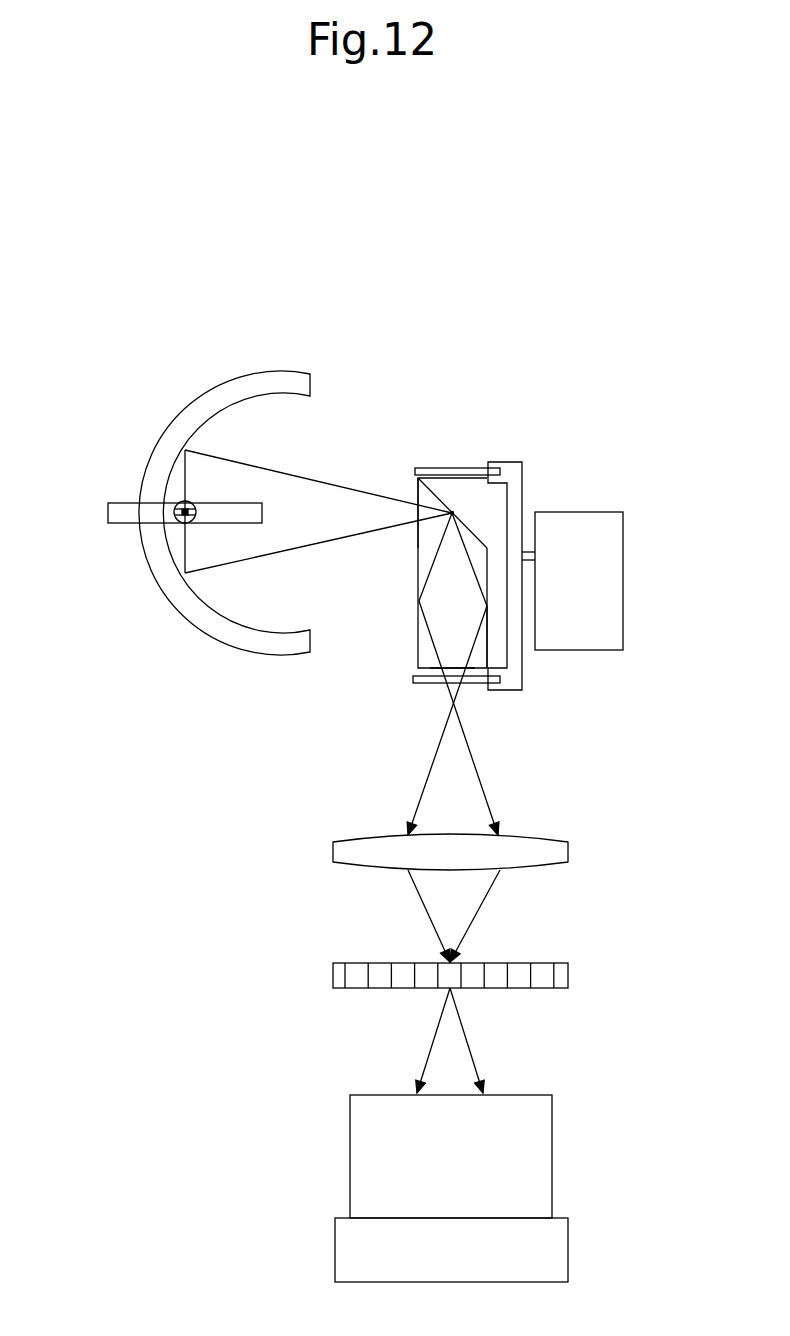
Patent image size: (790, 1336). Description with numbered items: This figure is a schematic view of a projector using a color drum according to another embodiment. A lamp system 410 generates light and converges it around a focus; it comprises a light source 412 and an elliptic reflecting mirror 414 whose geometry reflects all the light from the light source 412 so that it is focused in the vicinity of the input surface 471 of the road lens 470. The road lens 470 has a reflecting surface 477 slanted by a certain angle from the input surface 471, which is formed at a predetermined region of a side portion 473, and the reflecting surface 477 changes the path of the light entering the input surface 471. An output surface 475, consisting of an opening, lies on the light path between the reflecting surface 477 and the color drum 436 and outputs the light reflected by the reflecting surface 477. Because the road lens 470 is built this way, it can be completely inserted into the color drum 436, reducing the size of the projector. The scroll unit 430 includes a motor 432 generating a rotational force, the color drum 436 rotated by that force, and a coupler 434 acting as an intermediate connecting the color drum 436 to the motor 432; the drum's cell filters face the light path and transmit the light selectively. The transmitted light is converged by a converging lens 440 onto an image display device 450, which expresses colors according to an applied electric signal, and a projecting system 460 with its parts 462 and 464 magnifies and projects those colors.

The lamp system 410 is at (256, 521).
The light source 412 is at (174, 503).
The elliptic reflecting mirror 414 is at (192, 405).
The scroll unit 430 is at (565, 548).
The motor 432 is at (623, 578).
The coupler 434 is at (500, 688).
The color drum 436 is at (457, 467).
The converging lens 440 is at (557, 853).
The image display device 450 is at (542, 983).
The projecting system 460 is at (438, 1188).
The photodetector 462 is at (540, 1142).
The base 464 is at (568, 1248).
The road lens 470 is at (481, 586).
The input surface 471 is at (446, 511).
The side portion 473 is at (490, 650).
The output surface 475 is at (453, 666).
The reflecting surface 477 is at (463, 510).